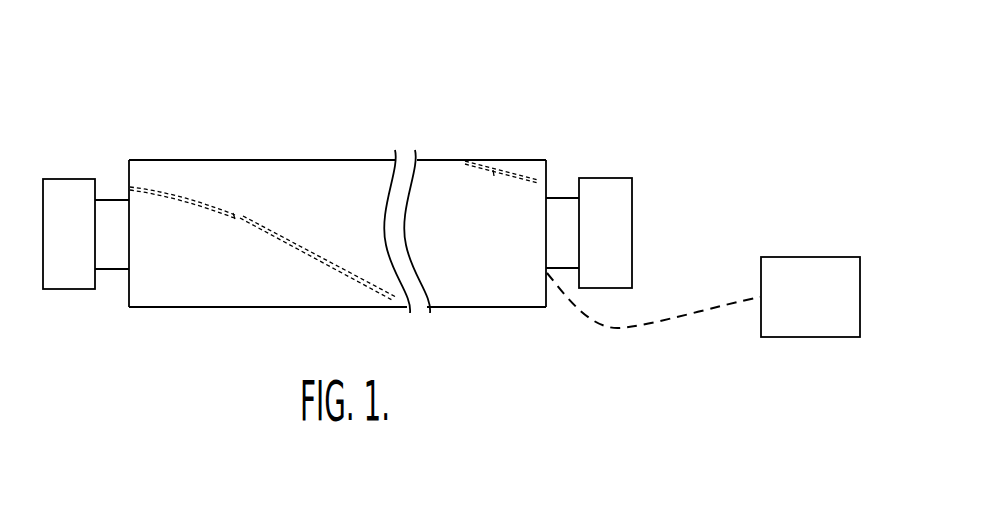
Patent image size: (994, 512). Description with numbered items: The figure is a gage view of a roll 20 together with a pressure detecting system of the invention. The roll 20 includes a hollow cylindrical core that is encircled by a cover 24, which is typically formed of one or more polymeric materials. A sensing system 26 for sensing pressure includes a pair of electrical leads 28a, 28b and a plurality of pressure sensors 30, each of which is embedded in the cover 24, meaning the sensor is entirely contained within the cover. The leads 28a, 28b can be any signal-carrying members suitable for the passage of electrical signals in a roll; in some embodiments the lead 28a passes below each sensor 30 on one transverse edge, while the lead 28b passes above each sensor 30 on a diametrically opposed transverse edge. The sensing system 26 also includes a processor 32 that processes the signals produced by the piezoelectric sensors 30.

The roll 20 is at (553, 145).
The cover 24 is at (529, 172).
The sensing system 26 is at (632, 338).
The electrical lead 28a is at (265, 233).
The electrical lead 28b is at (282, 253).
The pressure sensor 30 is at (495, 172).
The processor 32 is at (820, 287).